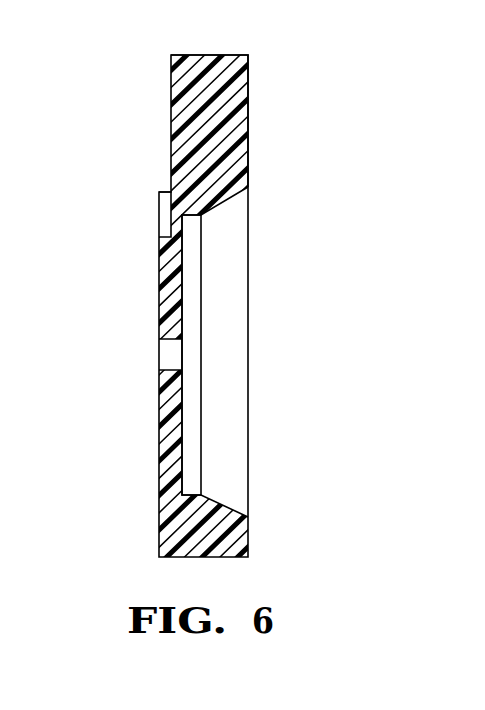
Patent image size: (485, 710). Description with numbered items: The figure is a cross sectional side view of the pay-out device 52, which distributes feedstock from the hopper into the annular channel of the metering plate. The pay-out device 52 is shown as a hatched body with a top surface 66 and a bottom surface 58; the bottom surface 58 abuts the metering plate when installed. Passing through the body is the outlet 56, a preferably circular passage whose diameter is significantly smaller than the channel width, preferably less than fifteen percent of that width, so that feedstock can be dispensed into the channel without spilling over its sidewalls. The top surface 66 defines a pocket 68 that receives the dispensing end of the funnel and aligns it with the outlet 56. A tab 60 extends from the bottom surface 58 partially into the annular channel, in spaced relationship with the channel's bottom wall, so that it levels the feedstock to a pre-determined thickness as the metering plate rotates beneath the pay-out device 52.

The pay-out device 52 is at (248, 80).
The bottom surface 58 is at (171, 103).
The top surface 66 is at (248, 117).
The pocket 68 is at (222, 201).
The outlet 56 is at (176, 341).
The tab 60 is at (159, 332).